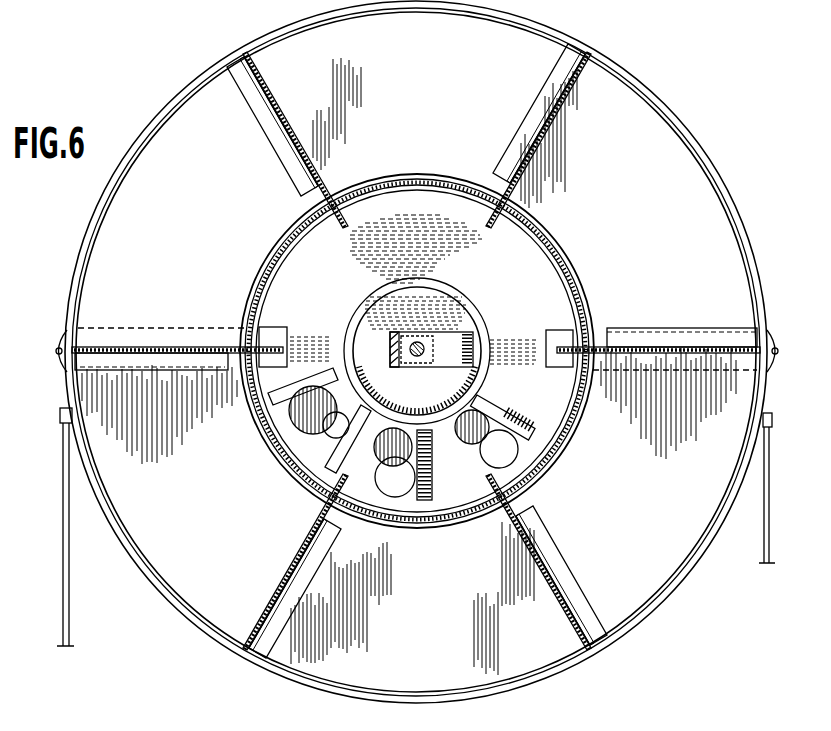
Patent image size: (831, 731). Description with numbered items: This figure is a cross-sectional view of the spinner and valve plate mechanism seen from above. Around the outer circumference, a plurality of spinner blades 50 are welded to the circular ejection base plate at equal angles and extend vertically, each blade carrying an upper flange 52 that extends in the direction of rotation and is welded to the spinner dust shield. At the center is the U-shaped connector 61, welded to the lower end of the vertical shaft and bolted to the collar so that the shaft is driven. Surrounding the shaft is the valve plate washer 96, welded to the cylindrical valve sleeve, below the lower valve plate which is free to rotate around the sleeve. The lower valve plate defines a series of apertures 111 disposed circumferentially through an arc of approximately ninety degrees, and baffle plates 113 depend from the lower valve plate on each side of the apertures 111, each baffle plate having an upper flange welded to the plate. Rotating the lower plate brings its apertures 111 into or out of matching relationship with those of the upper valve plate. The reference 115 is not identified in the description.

The spinner blade 50 is at (305, 113).
The upper flange 52 is at (538, 113).
The inner ring housing 115 is at (500, 279).
The valve plate washer 96 is at (470, 307).
The U-shaped connector 61 is at (448, 361).
The baffle plate 113 is at (336, 366).
The aperture 111 is at (328, 434).